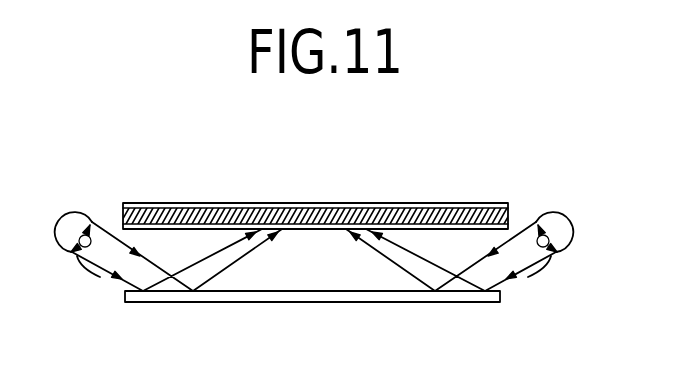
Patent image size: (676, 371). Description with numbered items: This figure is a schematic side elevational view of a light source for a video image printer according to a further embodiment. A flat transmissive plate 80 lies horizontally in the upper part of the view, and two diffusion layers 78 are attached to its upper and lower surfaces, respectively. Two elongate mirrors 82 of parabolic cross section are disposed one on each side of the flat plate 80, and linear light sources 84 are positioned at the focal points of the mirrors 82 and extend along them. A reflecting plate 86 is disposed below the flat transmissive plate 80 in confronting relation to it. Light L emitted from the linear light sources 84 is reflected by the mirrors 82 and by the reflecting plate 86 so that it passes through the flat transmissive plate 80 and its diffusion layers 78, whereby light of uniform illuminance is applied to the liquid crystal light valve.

The diffusion layer 78 is at (302, 207).
The flat transmissive plate 80 is at (165, 210).
The elongate mirror 82 is at (90, 221).
The linear light source 84 is at (73, 246).
The reflecting plate 86 is at (353, 297).
The light L is at (231, 263).